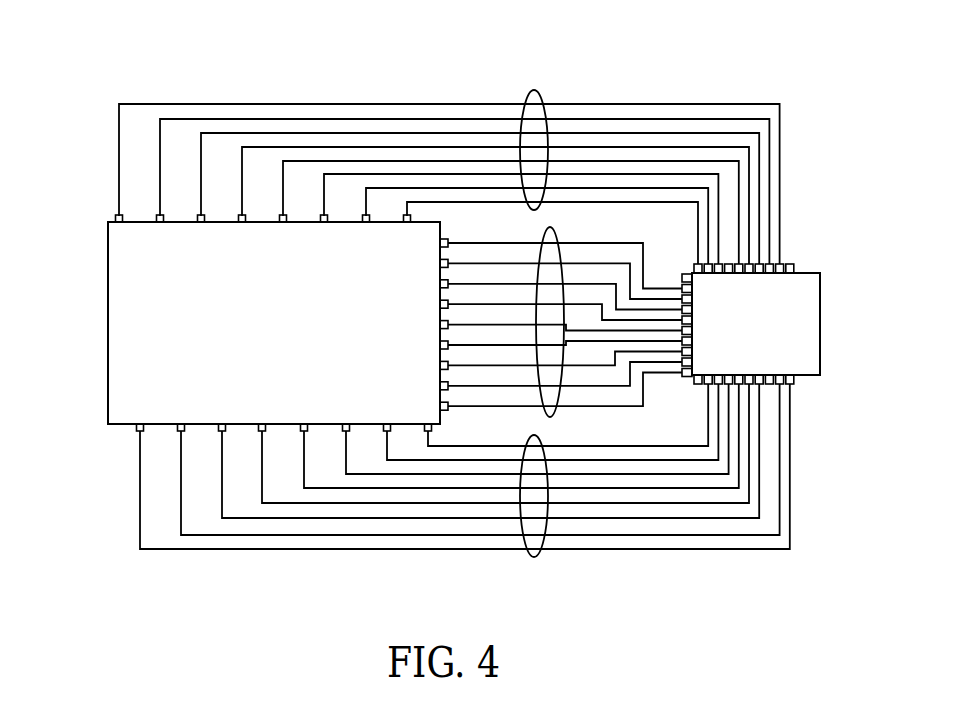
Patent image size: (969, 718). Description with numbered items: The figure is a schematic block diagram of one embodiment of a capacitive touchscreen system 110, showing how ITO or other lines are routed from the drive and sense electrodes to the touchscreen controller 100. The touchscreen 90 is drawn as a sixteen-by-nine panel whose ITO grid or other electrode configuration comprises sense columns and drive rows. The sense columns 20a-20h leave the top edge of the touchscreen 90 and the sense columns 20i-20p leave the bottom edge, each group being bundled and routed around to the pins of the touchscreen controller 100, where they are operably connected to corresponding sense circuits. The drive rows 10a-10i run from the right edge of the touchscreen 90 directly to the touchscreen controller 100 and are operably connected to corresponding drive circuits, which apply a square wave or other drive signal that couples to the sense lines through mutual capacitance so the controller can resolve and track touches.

The capacitive touchscreen system 110 is at (90, 76).
The touchscreen 90 is at (133, 308).
The touchscreen controller 100 is at (820, 323).
The sense columns 20a-20h is at (534, 90).
The drive rows 10a-10i is at (548, 232).
The sense columns 20i-20p is at (534, 556).